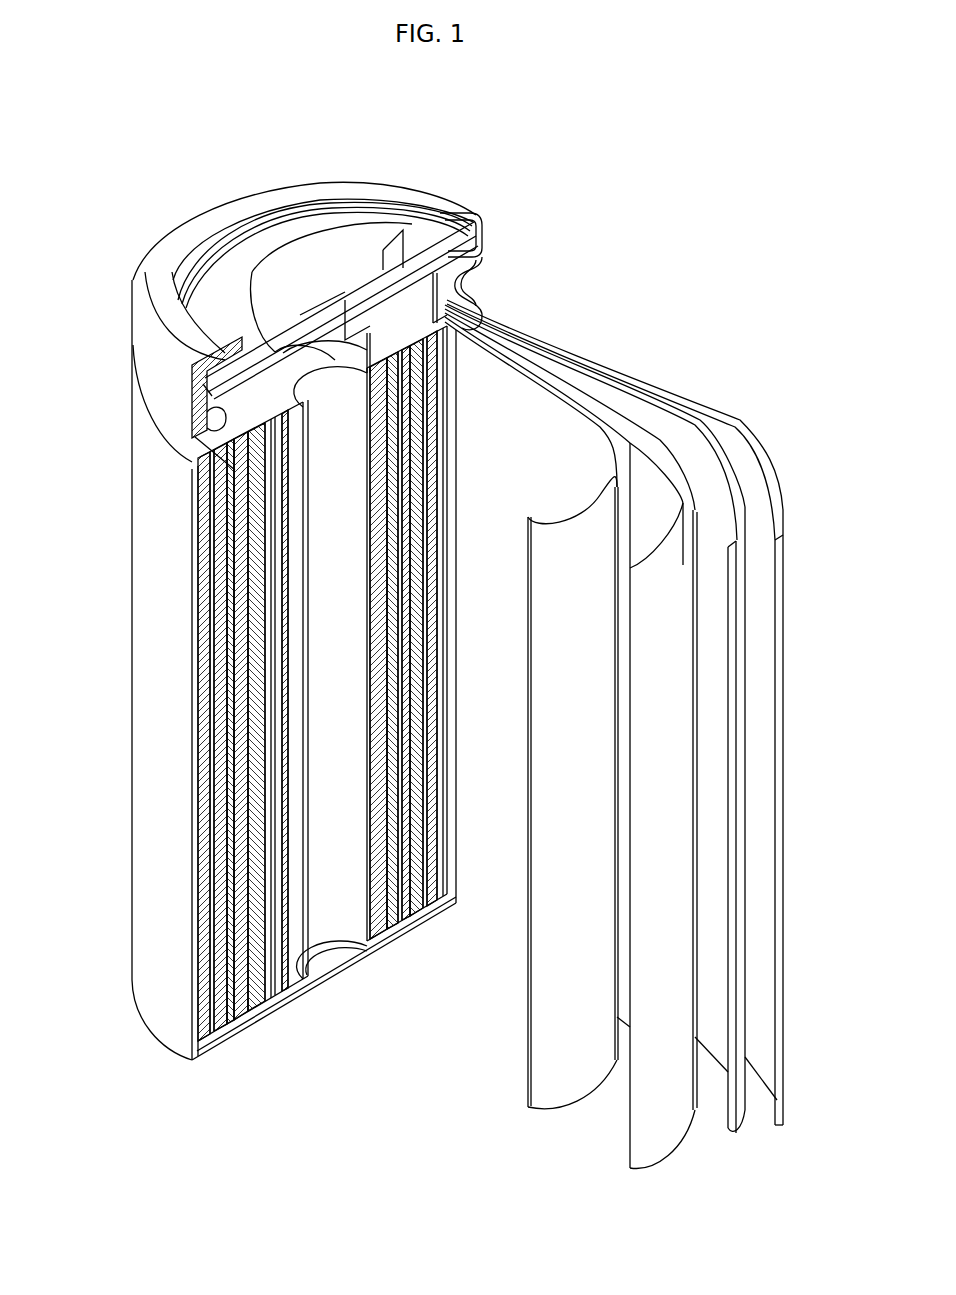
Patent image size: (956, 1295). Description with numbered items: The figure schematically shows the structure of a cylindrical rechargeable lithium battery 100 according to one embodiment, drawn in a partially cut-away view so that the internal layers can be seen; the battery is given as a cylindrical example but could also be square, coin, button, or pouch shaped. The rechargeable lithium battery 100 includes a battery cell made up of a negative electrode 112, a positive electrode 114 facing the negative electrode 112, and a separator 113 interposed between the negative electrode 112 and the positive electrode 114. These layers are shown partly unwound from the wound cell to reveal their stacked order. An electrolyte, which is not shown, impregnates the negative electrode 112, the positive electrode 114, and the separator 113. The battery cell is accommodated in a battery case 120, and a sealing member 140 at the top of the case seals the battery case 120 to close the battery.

The rechargeable lithium battery 100 is at (482, 172).
The negative electrode 112 is at (750, 478).
The separator 113 is at (500, 377).
The positive electrode 114 is at (631, 440).
The battery case 120 is at (141, 668).
The sealing member 140 is at (291, 232).